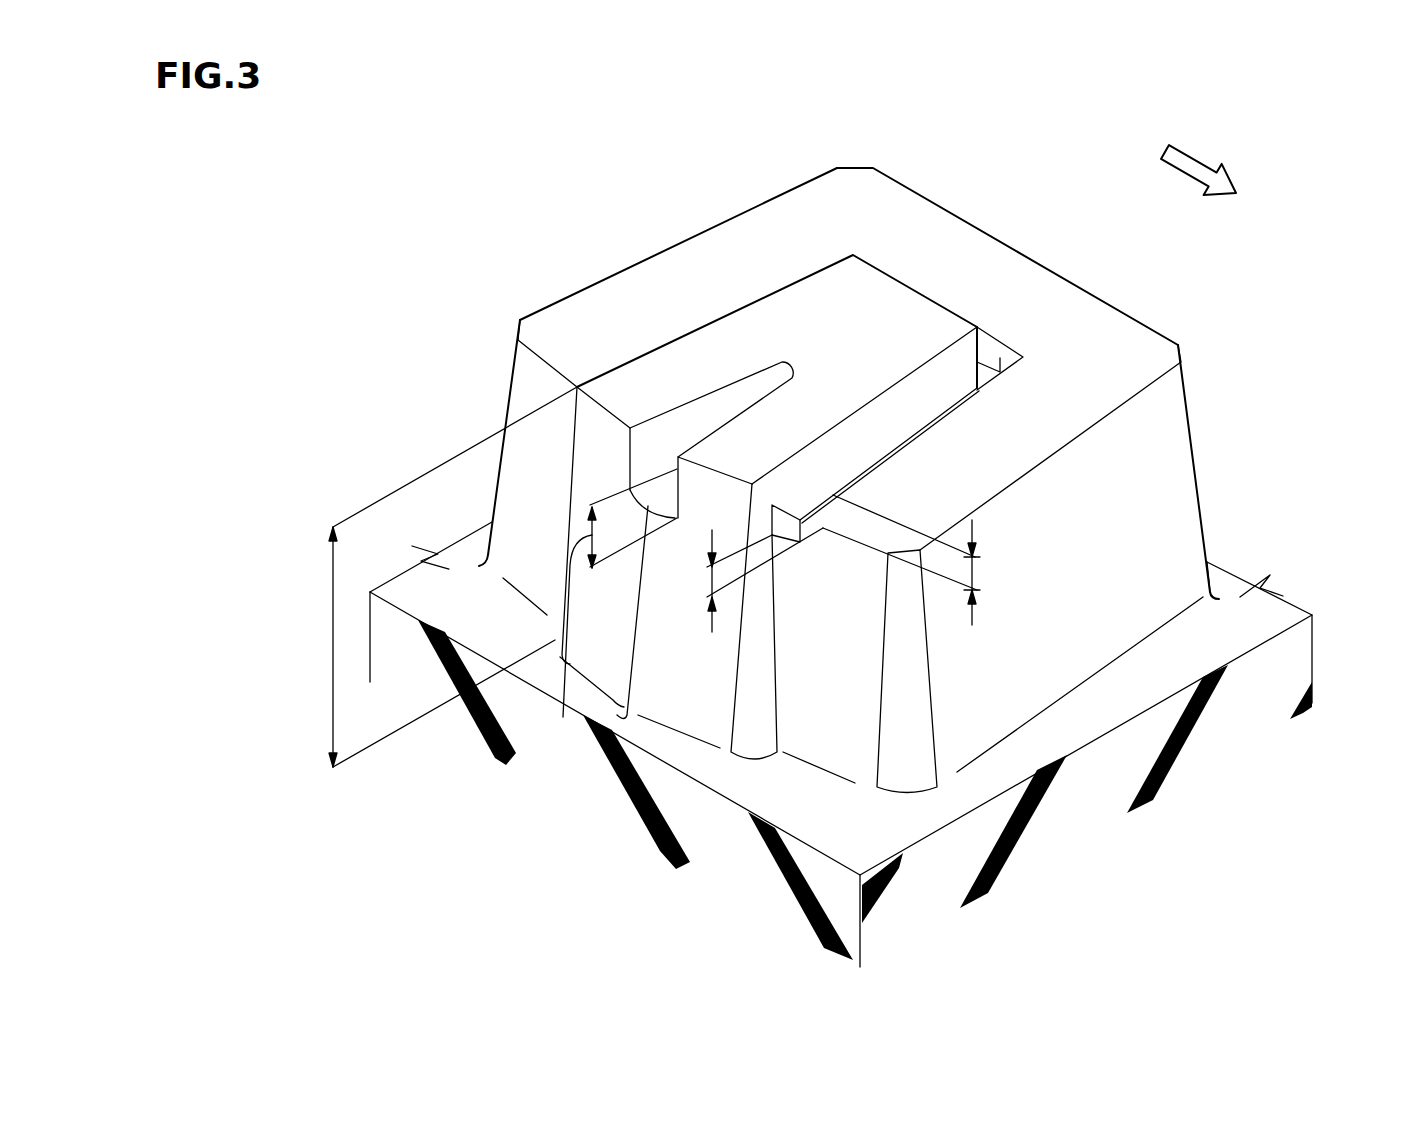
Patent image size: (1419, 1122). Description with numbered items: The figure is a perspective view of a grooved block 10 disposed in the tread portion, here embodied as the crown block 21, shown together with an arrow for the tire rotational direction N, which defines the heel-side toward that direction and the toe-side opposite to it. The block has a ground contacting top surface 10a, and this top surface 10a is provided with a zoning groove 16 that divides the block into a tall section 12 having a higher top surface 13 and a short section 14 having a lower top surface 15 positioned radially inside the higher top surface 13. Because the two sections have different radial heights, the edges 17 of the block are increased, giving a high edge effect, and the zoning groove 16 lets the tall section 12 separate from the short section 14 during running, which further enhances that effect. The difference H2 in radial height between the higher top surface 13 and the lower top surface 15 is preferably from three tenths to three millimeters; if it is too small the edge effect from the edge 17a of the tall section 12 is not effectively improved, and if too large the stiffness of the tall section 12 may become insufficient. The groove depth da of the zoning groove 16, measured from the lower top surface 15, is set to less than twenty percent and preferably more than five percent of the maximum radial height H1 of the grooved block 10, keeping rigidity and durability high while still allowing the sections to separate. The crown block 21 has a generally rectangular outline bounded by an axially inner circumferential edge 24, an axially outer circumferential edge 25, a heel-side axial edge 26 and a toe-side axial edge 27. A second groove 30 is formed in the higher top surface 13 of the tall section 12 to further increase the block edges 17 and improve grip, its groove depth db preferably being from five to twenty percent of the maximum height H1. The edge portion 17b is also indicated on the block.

The grooved block 10 is at (841, 536).
The crown block 21 is at (548, 173).
The tall section 12 is at (843, 329).
The higher top surface 13 is at (877, 313).
The short section 14 is at (1224, 435).
The lower top surface 15 is at (1098, 355).
The zoning groove 16 is at (998, 362).
The edges 17 is at (977, 460).
The edge of the tall section 17a is at (977, 460).
The second groove portion 17b is at (735, 377).
The axially inner circumferential edge 24 is at (917, 192).
The axially outer circumferential edge 25 is at (547, 367).
The heel-side axial edge 26 is at (1080, 428).
The toe-side axial edge 27 is at (597, 280).
The second groove 30 is at (685, 430).
The top surface 10a is at (1000, 448).
The maximum radial height H1 is at (433, 577).
The height difference H2 is at (972, 570).
The groove depth of the zoning groove da is at (708, 585).
The groove depth of the second groove db is at (590, 537).
The tire rotational direction N is at (1212, 182).